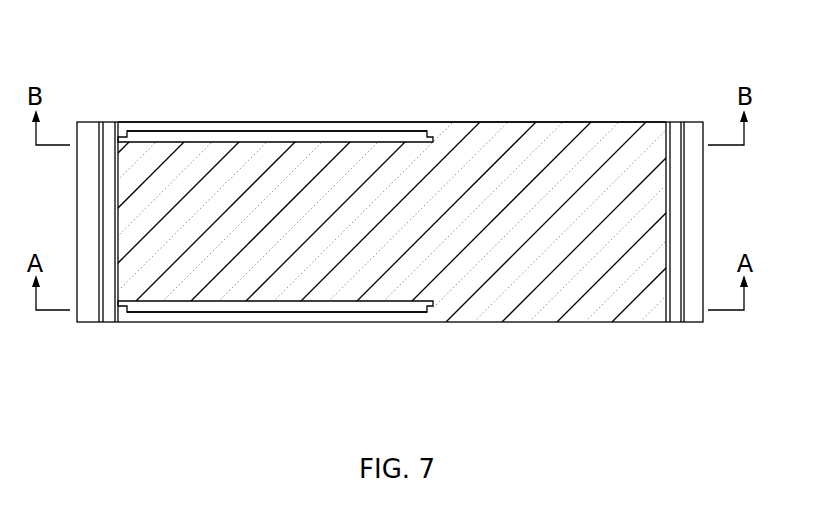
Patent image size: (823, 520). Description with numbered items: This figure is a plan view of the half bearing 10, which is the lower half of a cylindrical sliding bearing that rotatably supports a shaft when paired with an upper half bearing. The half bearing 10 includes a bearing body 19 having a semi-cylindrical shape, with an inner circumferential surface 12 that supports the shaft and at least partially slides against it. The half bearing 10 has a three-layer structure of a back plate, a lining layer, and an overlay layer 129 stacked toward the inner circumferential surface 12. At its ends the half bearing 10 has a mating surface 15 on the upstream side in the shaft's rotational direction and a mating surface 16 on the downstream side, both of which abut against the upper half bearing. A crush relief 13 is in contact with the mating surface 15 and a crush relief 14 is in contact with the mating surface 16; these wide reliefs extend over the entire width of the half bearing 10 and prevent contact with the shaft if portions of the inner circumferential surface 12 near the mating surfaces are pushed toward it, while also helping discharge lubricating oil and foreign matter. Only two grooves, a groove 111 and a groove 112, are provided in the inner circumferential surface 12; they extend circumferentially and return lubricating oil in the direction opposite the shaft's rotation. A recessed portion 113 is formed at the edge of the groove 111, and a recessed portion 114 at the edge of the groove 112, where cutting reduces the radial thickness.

The half bearing 10 is at (460, 75).
The inner circumferential surface 12 is at (530, 310).
The overlay layer 129 is at (572, 272).
The bearing body 19 is at (563, 121).
The crush relief 13 is at (675, 313).
The crush relief 14 is at (105, 323).
The mating surface 15 is at (695, 130).
The mating surface 16 is at (92, 145).
The groove 111 is at (272, 298).
The groove 112 is at (282, 145).
The recessed portion 113 is at (222, 313).
The recessed portion 114 is at (230, 128).